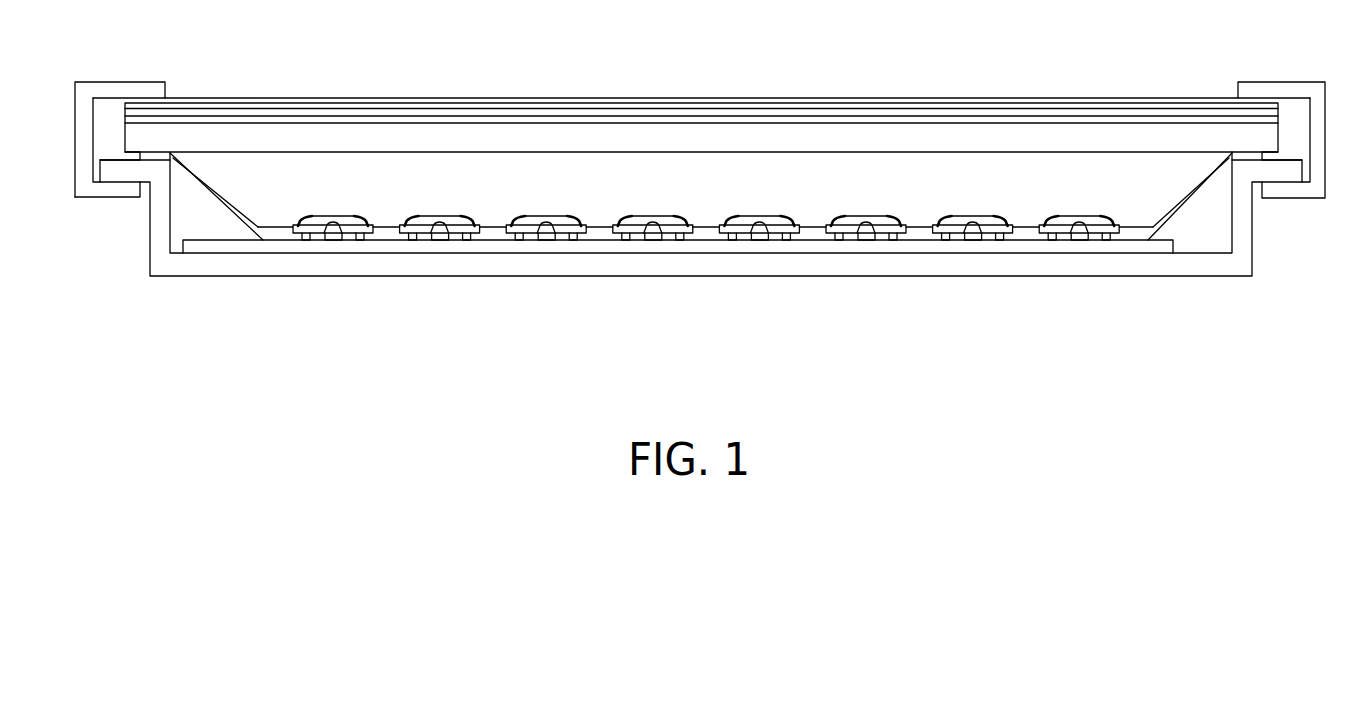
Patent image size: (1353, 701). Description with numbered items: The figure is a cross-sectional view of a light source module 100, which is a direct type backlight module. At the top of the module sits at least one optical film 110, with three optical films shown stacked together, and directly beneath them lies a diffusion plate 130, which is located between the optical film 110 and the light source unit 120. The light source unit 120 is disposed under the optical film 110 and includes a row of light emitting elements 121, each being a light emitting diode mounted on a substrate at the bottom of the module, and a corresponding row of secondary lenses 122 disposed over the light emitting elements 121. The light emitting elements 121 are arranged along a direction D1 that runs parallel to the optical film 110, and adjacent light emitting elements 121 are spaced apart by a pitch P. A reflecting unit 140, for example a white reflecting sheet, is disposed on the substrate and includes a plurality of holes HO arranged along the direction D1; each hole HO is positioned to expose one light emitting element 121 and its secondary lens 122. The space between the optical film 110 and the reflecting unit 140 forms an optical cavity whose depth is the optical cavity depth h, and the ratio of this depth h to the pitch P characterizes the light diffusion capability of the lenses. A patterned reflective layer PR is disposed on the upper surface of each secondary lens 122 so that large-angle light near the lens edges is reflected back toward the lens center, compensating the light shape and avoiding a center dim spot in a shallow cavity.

The light source module 100 is at (1295, 357).
The optical film 110 is at (1103, 120).
The light source unit 120 is at (705, 213).
The light emitting element 121 is at (970, 241).
The secondary lens 122 is at (957, 241).
The diffusion plate 130 is at (1193, 137).
The reflecting unit 140 is at (1021, 242).
The patterned reflective layer PR is at (940, 222).
The hole HO is at (975, 206).
The pitch P is at (653, 228).
The direction D1 is at (815, 73).
The optical cavity depth h is at (705, 152).